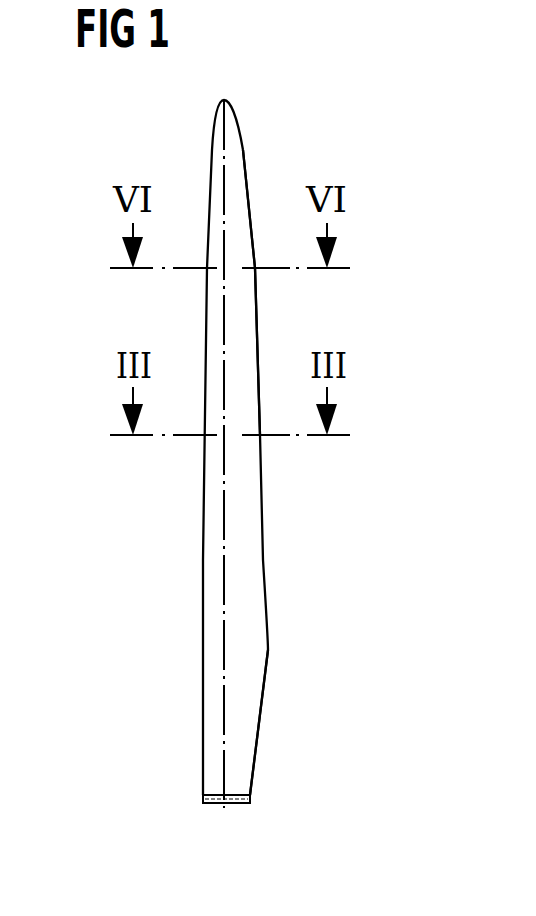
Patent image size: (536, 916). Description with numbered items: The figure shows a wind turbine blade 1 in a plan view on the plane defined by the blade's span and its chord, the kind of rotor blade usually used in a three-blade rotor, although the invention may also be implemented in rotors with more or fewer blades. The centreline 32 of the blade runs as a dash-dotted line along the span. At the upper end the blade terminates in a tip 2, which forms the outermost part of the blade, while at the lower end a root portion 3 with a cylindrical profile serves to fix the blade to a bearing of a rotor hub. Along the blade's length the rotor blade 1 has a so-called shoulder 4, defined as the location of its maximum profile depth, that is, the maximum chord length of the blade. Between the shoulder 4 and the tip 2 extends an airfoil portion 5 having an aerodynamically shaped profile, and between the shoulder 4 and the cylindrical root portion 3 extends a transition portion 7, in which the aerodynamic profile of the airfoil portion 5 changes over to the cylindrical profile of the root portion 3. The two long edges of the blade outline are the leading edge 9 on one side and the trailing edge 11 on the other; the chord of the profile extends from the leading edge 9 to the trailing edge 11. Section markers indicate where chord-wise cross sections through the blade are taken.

The wind turbine blade 1 is at (231, 453).
The tip 2 is at (223, 103).
The root portion 3 is at (235, 803).
The shoulder 4 is at (268, 657).
The airfoil portion 5 is at (332, 306).
The transition portion 7 is at (330, 703).
The leading edge 9 is at (203, 540).
The trailing edge 11 is at (264, 527).
The centreline 32 is at (223, 609).